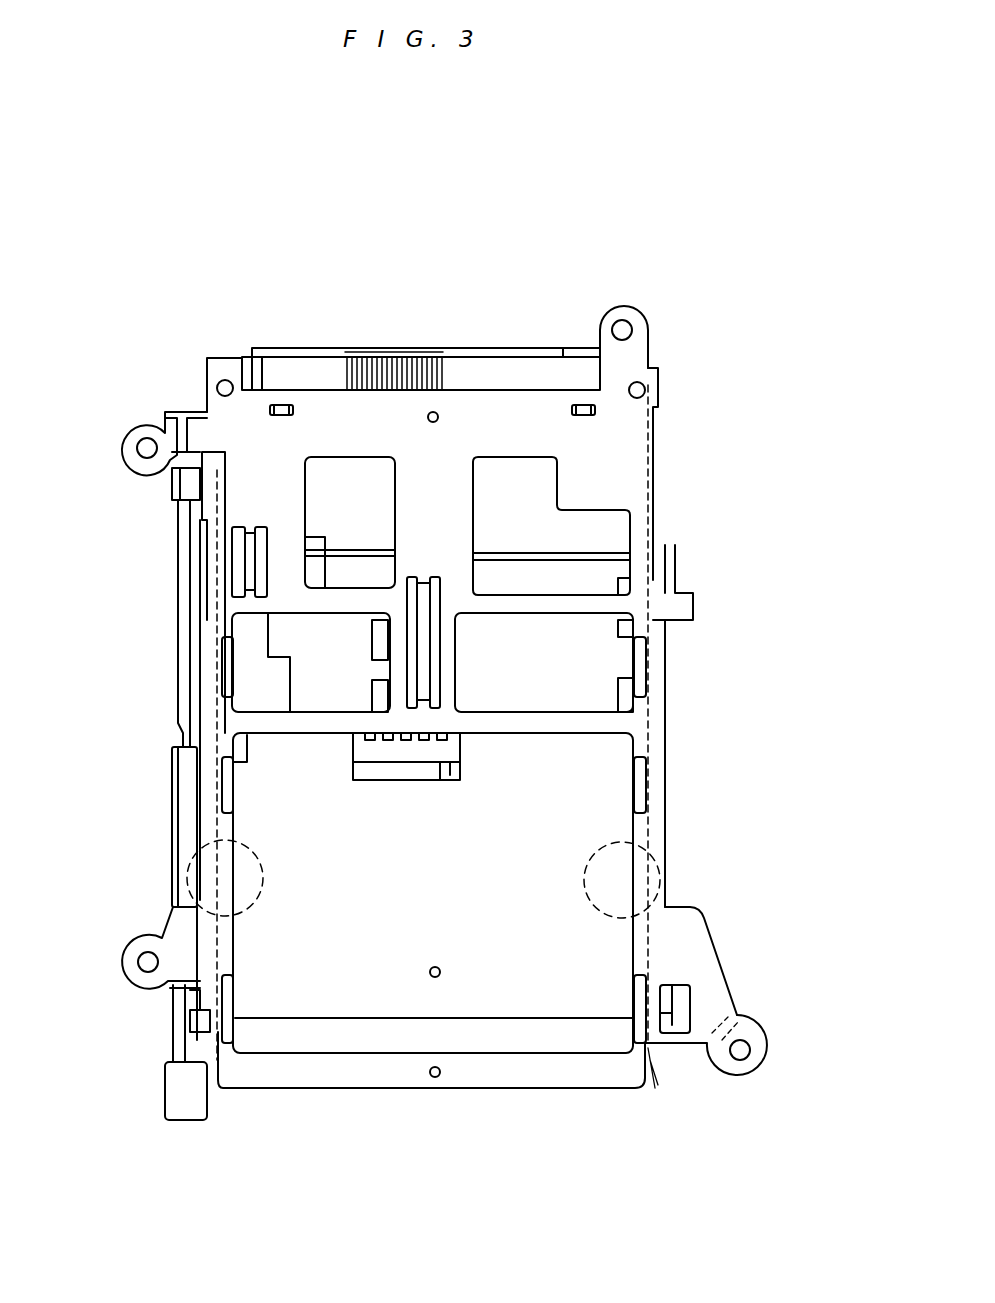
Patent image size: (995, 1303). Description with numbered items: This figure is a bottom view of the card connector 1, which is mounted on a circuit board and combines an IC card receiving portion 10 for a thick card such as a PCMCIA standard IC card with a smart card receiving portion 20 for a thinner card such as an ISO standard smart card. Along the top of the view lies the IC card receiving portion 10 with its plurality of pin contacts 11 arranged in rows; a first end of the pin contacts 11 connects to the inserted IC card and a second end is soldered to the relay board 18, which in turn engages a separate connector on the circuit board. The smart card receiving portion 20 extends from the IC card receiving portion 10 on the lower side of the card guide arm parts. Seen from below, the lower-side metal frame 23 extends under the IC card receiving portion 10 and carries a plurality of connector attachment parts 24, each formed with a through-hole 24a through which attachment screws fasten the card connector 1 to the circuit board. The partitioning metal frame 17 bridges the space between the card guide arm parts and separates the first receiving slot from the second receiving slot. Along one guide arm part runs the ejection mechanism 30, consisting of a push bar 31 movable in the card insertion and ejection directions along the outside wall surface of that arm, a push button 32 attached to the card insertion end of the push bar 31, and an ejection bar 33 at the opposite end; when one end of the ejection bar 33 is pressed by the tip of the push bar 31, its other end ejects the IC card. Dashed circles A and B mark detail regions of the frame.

The card connector 1 is at (535, 328).
The IC card receiving portion 10 is at (540, 482).
The pin contacts 11 is at (440, 385).
The partitioning metal frame 17 is at (372, 995).
The relay board 18 is at (323, 348).
The smart card receiving portion 20 is at (413, 750).
The lower-side metal frame 23 is at (668, 927).
The connector attachment parts 24 is at (633, 306).
The through-holes 24a is at (631, 330).
The ejection mechanism 30 is at (160, 810).
The push bar 31 is at (178, 713).
The push button 32 is at (165, 1092).
The ejection bar 33 is at (173, 482).
The detail region A is at (262, 863).
The detail region B is at (588, 857).